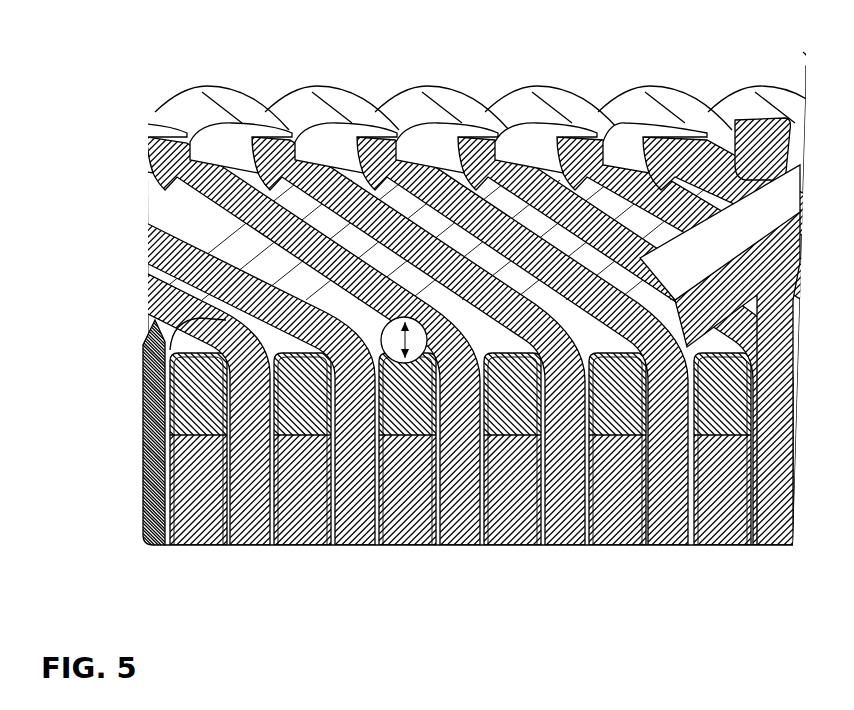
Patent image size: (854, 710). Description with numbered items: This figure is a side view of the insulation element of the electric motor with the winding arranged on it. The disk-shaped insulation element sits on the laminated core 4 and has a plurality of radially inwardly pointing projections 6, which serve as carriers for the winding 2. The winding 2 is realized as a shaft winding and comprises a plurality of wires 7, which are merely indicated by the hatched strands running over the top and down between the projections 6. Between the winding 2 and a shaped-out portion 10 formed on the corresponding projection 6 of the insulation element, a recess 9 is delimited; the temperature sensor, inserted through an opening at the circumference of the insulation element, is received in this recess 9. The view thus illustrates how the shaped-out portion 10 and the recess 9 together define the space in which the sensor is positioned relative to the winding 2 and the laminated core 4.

The winding 2 is at (299, 86).
The laminated core 4 is at (213, 550).
The projections 6 is at (300, 415).
The wires 7 is at (171, 261).
The recess 9 is at (404, 334).
The shaped-out portion 10 is at (406, 378).